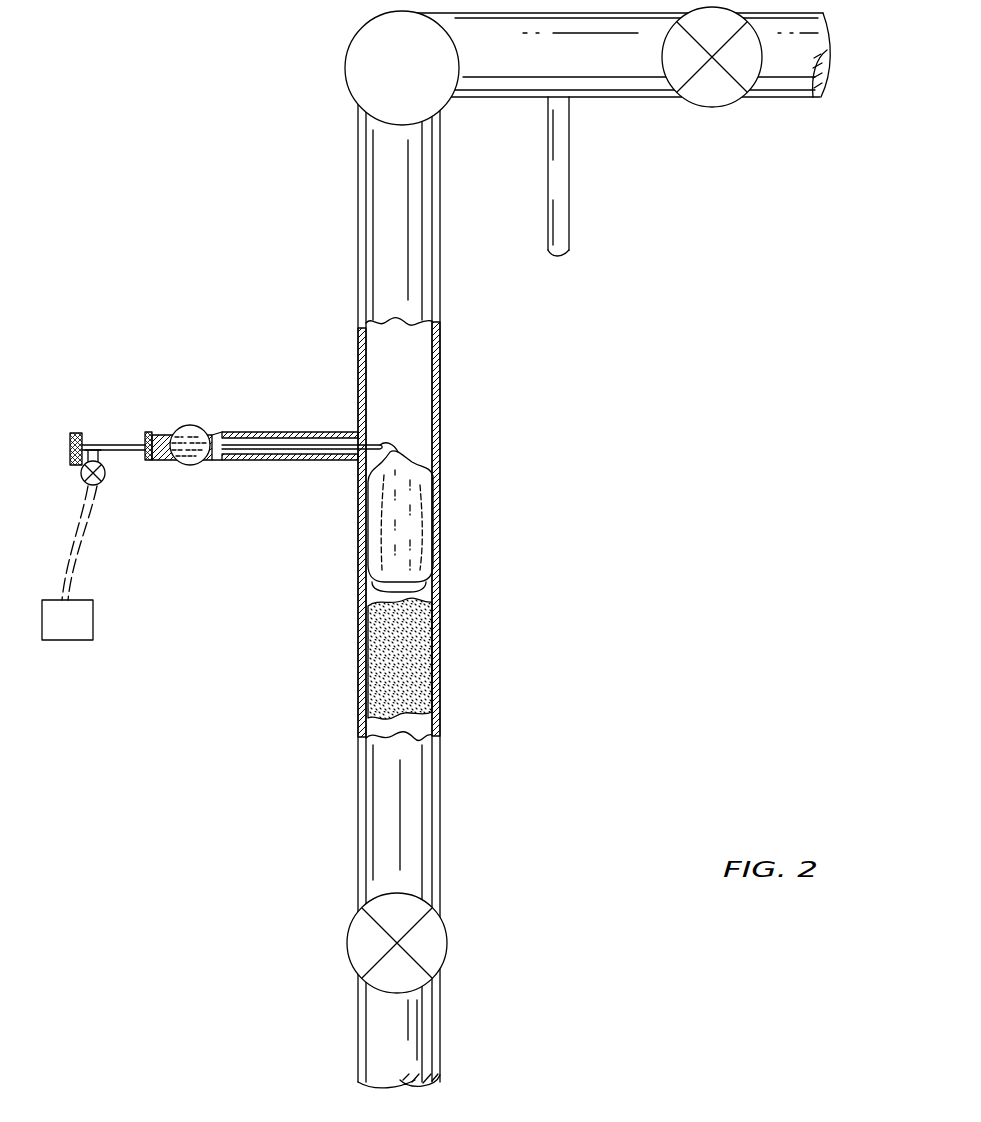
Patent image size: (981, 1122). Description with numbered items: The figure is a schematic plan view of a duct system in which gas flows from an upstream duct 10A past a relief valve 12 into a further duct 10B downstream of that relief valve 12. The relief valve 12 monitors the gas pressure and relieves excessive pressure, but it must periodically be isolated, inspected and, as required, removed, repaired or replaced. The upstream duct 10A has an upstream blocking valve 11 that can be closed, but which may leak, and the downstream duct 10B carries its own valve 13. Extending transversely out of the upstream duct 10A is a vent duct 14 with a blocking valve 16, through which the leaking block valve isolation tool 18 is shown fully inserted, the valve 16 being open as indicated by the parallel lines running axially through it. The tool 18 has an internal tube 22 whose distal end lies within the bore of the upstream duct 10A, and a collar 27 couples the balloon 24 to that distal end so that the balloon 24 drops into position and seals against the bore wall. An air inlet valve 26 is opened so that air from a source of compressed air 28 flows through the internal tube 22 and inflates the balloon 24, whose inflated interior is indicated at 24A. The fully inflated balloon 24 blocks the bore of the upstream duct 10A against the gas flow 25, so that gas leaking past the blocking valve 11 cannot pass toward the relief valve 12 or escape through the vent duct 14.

The upstream duct 10A is at (440, 775).
The further duct 10B is at (592, 97).
The upstream blocking valve 11 is at (430, 942).
The relief valve 12 is at (345, 63).
The upper valve 13 is at (708, 87).
The vent duct 14 is at (325, 432).
The blocking valve 16 is at (190, 425).
The leaking block valve isolation tool 18 is at (212, 379).
The internal tube 22 is at (108, 443).
The balloon 24 is at (440, 521).
The bladder interior 24A is at (397, 540).
The gas flow 25 is at (407, 665).
The air inlet valve 26 is at (105, 480).
The collar 27 is at (390, 447).
The source of compressed air 28 is at (93, 618).